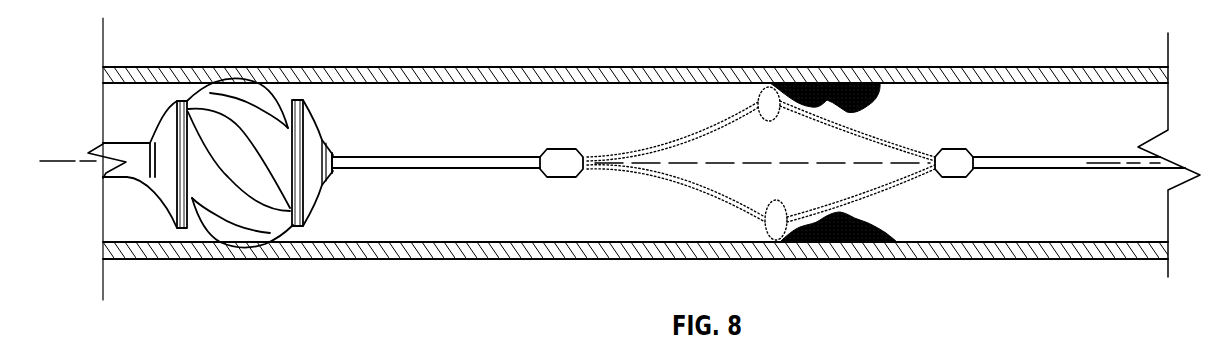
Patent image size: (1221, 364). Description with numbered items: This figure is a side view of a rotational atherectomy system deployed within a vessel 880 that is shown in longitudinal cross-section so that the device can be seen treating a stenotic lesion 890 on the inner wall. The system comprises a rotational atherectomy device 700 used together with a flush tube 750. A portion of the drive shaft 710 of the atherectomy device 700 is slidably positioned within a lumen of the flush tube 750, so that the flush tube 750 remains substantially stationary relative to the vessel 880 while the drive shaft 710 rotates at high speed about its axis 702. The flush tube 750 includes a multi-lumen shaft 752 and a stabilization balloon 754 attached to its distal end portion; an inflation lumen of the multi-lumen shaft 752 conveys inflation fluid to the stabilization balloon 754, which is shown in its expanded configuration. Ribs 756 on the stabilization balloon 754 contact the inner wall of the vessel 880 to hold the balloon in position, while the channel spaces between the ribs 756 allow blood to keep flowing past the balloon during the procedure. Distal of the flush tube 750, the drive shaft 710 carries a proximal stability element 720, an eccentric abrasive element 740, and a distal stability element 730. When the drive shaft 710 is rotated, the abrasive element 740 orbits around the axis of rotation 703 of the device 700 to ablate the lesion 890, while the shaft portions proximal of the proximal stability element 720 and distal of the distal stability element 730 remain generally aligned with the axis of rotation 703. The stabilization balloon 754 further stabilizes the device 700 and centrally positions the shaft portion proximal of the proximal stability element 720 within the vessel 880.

The rotational atherectomy device 700 is at (759, 163).
The axis 702 is at (97, 162).
The axis of rotation 703 is at (737, 164).
The drive shaft 710 is at (497, 183).
The proximal stability element 720 is at (567, 148).
The distal stability element 730 is at (963, 148).
The abrasive element 740 is at (760, 96).
The flush tube 750 is at (256, 157).
The multi-lumen shaft 752 is at (125, 177).
The stabilization balloon 754 is at (318, 100).
The ribs 756 is at (277, 97).
The vessel 880 is at (1018, 66).
The stenotic lesion 890 is at (873, 105).